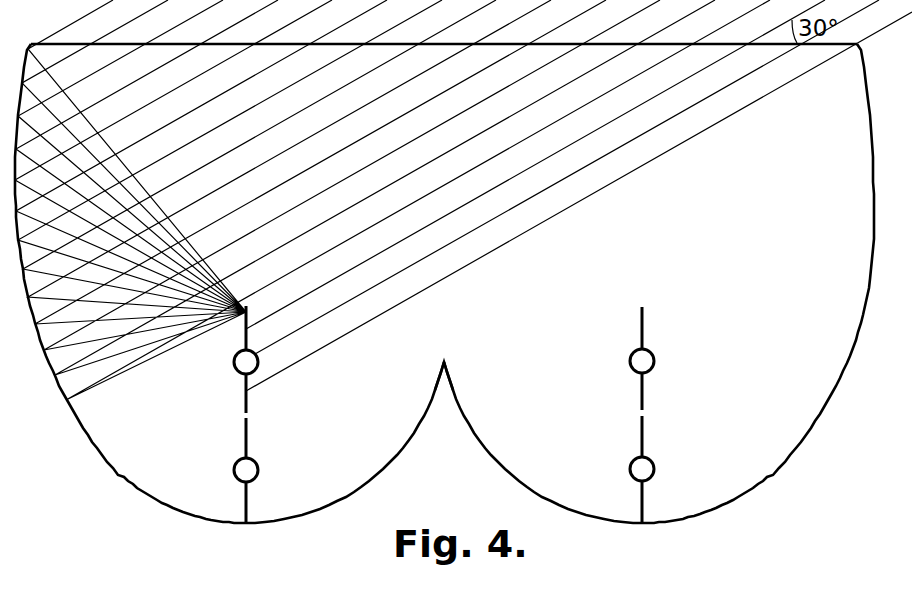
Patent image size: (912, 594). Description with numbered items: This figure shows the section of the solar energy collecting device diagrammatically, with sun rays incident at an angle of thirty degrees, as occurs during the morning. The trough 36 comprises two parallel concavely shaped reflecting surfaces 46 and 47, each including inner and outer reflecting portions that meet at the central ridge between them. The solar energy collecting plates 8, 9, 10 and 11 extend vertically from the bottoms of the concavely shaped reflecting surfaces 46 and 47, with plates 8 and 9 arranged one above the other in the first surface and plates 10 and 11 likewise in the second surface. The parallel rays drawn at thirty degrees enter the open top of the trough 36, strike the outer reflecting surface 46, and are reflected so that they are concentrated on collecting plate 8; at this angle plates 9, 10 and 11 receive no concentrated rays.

The solar energy collecting plate 8 is at (245, 397).
The solar energy collecting plate 9 is at (245, 441).
The solar energy collecting plate 10 is at (641, 316).
The solar energy collecting plate 11 is at (641, 437).
The trough 36 is at (447, 374).
The concavely shaped reflecting surface 46 is at (355, 409).
The concavely shaped reflecting surface 47 is at (566, 409).